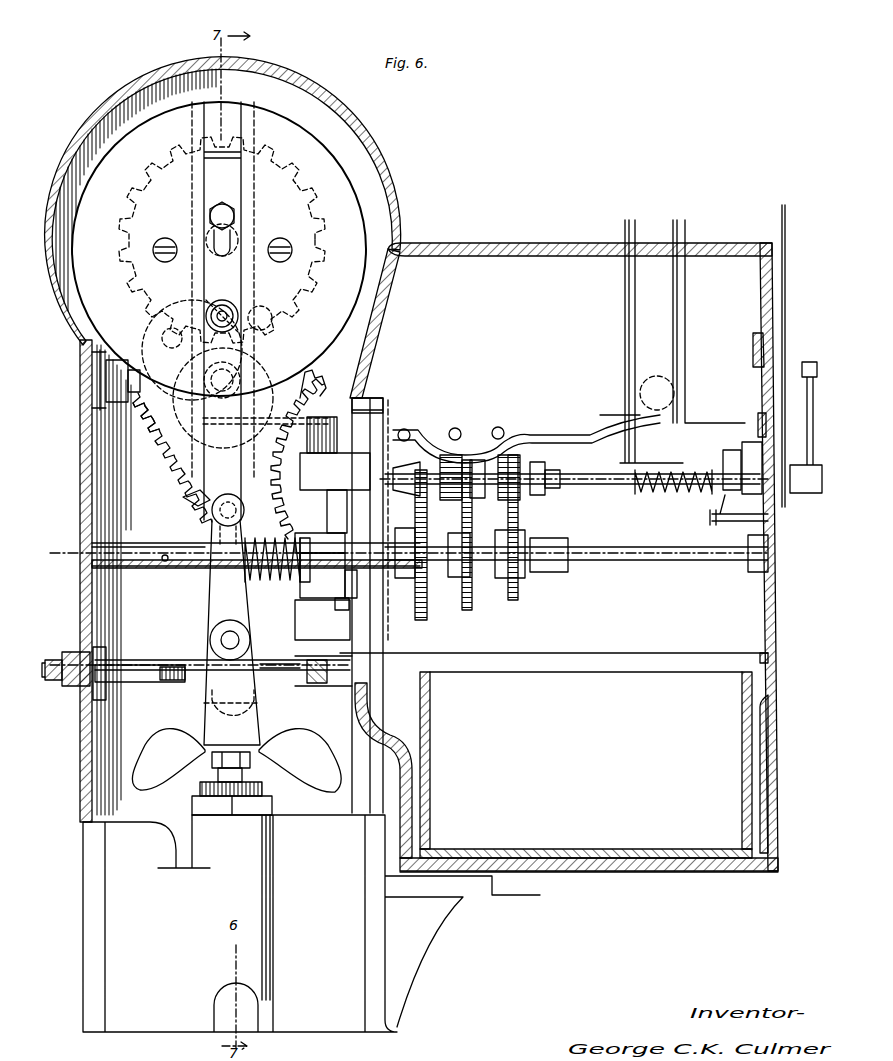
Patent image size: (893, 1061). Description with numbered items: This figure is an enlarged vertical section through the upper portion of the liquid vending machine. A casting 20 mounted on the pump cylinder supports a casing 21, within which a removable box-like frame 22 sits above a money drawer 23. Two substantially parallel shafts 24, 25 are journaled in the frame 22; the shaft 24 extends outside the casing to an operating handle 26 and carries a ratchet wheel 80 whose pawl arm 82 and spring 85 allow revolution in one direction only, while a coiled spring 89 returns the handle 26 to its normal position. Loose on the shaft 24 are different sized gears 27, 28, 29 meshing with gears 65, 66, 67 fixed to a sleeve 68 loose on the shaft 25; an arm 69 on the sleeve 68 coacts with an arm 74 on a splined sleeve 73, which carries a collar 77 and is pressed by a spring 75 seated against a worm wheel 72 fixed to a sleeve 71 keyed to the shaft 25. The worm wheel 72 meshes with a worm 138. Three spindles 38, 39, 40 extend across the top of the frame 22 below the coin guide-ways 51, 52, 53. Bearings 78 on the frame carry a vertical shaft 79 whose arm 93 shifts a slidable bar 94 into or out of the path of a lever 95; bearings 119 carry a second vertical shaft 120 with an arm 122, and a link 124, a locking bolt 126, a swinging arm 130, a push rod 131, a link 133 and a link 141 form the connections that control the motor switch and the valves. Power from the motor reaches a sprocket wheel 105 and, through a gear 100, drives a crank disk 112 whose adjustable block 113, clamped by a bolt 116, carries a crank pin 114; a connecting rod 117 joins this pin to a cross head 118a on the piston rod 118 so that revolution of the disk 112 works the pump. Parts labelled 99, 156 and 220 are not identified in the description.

The casting 20 is at (378, 958).
The casing 21 is at (80, 440).
The box-like frame 22 is at (778, 600).
The money drawer 23 is at (730, 778).
The shaft 24 is at (588, 478).
The shaft 25 is at (92, 550).
The operating handle 26 is at (807, 404).
The gear 27 is at (407, 473).
The gear 28 is at (465, 498).
The gear 29 is at (510, 498).
The spindle 38 is at (405, 429).
The spindle 39 is at (455, 428).
The spindle 40 is at (499, 427).
The guide-way 51 is at (666, 341).
The guide-way 52 is at (681, 350).
The guide-way 53 is at (675, 375).
The gear 65 is at (427, 612).
The gear 66 is at (472, 604).
The gear 67 is at (518, 592).
The sleeve 68 is at (536, 545).
The arm 69 is at (330, 512).
The sleeve 71 is at (150, 572).
The worm wheel 72 is at (216, 594).
The sleeve 73 is at (300, 578).
The arm 74 is at (350, 485).
The spring 75 is at (266, 580).
The collar 77 is at (340, 576).
The bearings 78 is at (352, 430).
The vertical shaft 79 is at (318, 601).
The ratchet wheel 80 is at (742, 521).
The arm 82 is at (724, 466).
The spring 85 is at (748, 450).
The spring 89 is at (675, 492).
The arm 93 is at (301, 386).
The slidable bar 94 is at (118, 385).
The lever 95 is at (152, 346).
The bar 99 is at (562, 418).
The gear 100 is at (165, 442).
The sprocket wheel 105 is at (285, 170).
The crank disk 112 is at (350, 185).
The block 113 is at (212, 189).
The crank pin 114 is at (235, 305).
The bolt 116 is at (238, 216).
The connecting rod 117 is at (214, 470).
The piston rod 118 is at (240, 776).
The cross head 118a is at (236, 761).
The bearings 119 is at (312, 466).
The vertical shaft 120 is at (318, 605).
The arm 122 is at (315, 683).
The link 124 is at (172, 660).
The locking bolt 126 is at (138, 660).
The swinging arm 130 is at (108, 690).
The push rod 131 is at (78, 660).
The link 133 is at (266, 670).
The worm 138 is at (212, 520).
The link 141 is at (54, 682).
The pawl 156 is at (183, 497).
The line 220 is at (786, 303).